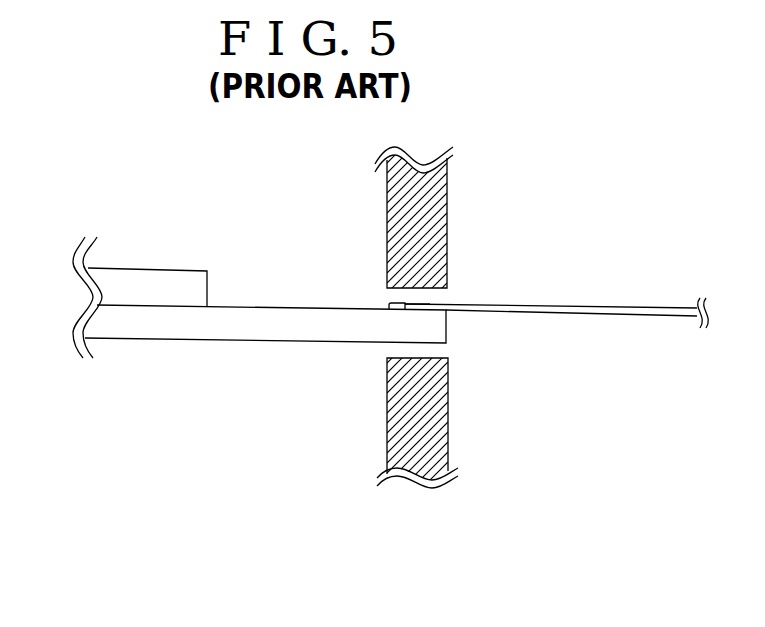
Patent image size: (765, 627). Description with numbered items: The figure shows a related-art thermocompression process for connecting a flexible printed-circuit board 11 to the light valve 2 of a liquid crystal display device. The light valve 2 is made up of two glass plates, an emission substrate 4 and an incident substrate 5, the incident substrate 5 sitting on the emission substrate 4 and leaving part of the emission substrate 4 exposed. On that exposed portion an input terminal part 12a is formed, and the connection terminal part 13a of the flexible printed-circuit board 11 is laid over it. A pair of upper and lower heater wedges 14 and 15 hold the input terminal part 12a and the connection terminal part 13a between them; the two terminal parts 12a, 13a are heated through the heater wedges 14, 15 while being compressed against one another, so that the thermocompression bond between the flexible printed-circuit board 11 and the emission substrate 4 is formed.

The light valve 2 is at (120, 268).
The incident substrate 5 is at (160, 283).
The emission substrate 4 is at (440, 327).
The flexible printed-circuit board 11 is at (542, 305).
The input terminal part 12a is at (403, 305).
The connection terminal part 13a is at (430, 303).
The heater wedge 14 is at (436, 190).
The heater wedge 15 is at (437, 412).